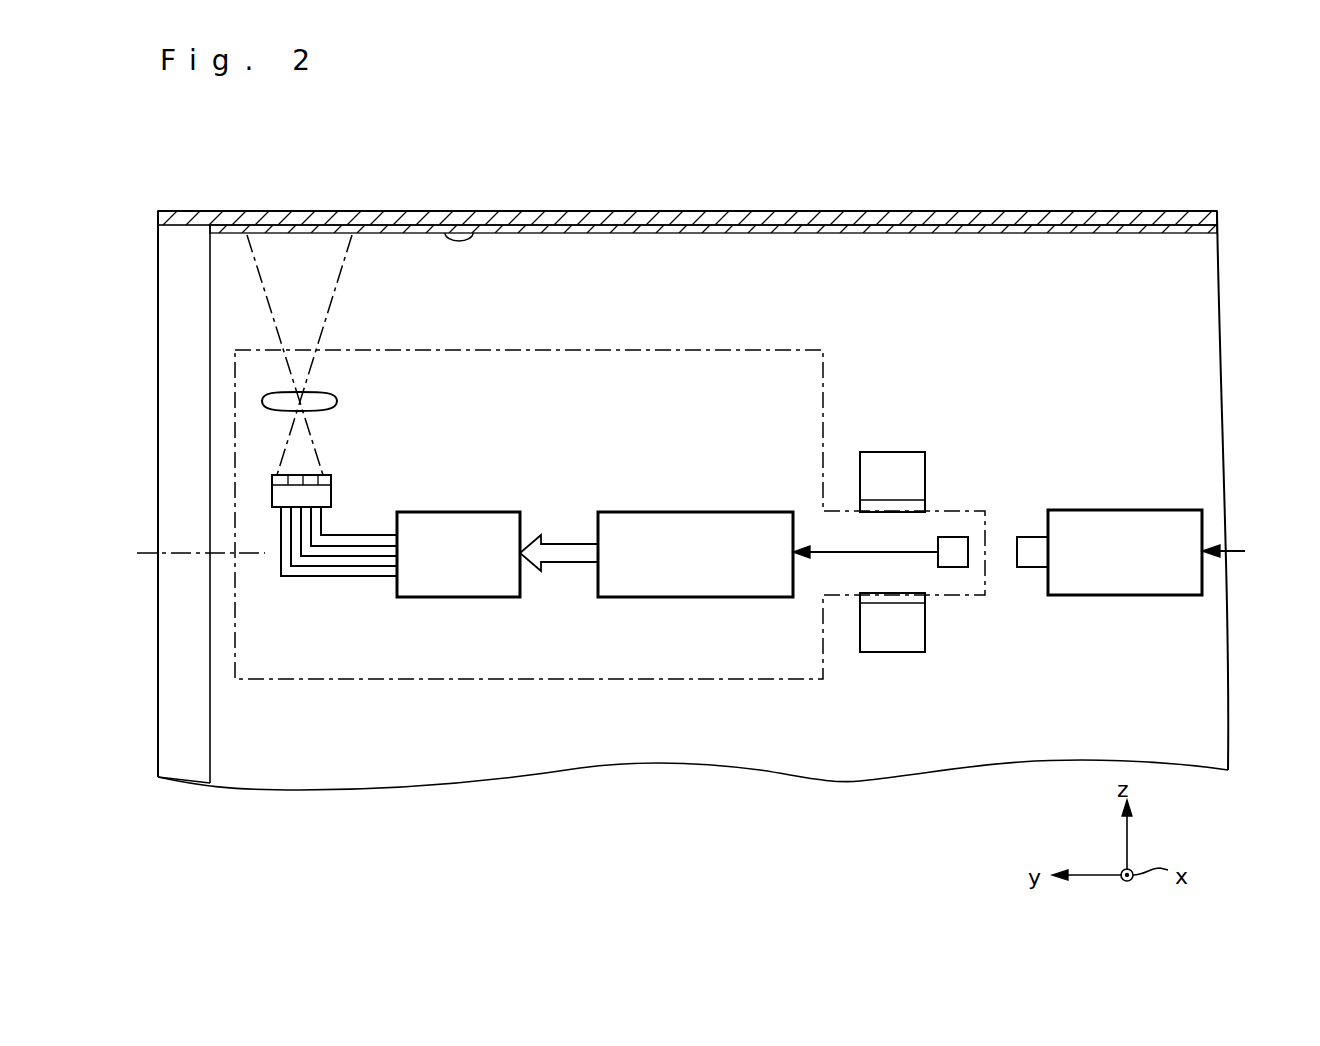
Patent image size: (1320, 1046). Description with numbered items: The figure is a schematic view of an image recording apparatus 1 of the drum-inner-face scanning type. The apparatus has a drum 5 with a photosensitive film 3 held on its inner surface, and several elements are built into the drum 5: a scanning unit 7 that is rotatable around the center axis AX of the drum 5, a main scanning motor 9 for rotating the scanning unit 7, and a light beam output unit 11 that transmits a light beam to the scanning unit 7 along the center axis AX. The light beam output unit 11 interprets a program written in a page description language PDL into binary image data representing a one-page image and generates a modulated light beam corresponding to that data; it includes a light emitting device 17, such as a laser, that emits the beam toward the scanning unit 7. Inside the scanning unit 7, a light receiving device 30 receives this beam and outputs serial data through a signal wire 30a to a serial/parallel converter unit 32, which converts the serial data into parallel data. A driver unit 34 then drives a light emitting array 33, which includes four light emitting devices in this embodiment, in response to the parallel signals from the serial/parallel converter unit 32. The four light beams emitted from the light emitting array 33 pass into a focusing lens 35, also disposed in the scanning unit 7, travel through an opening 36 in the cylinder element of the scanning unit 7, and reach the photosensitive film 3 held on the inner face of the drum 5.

The image recording apparatus 1 is at (652, 188).
The drum 5 is at (396, 212).
The photosensitive film 3 is at (478, 232).
The scanning unit 7 is at (520, 350).
The main scanning motor 9 is at (900, 452).
The light receiving device 30 is at (957, 537).
The signal wire 30a is at (850, 556).
The light emitting device 17 is at (1032, 537).
The light beam output unit 11 is at (1118, 510).
The opening 36 is at (282, 350).
The focusing lens 35 is at (262, 393).
The light emitting array 33 is at (272, 492).
The driver unit 34 is at (438, 598).
The serial/parallel converter unit 32 is at (682, 598).
The center axis AX is at (181, 553).
The page description language PDL is at (1251, 553).